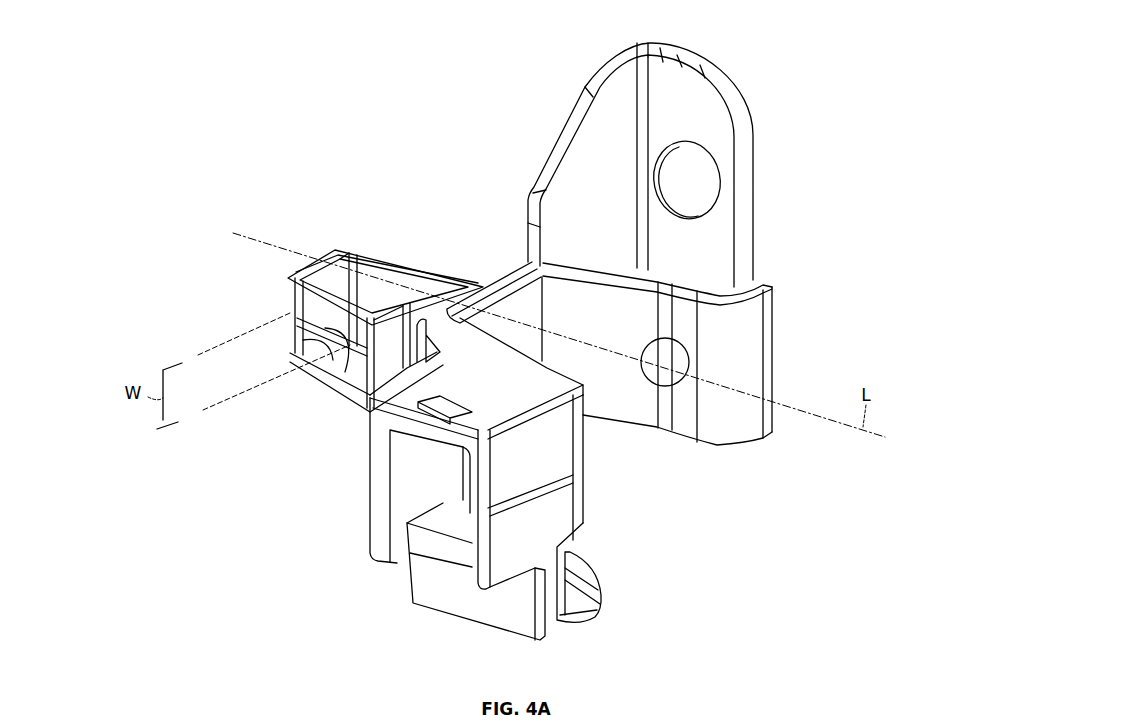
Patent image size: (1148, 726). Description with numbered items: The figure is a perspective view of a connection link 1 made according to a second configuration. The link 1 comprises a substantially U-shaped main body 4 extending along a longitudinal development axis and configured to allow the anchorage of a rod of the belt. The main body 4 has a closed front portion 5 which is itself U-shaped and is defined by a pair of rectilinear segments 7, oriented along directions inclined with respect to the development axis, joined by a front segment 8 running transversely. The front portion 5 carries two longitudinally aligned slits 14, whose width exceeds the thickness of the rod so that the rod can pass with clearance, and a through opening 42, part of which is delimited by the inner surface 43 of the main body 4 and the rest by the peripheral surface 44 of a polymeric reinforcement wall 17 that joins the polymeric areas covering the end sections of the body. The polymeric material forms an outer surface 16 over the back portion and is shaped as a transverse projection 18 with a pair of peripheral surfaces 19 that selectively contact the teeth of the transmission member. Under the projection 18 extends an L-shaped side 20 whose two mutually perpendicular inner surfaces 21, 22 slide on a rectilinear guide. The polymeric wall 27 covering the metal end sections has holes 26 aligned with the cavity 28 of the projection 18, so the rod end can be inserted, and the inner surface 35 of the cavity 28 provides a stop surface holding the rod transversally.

The link 1 is at (823, 160).
The main body 4 is at (445, 198).
The closed front portion 5 is at (390, 237).
The rectilinear segments 7 is at (465, 277).
The front segment 8 is at (322, 250).
The slits 14 is at (423, 277).
The outer surface of polymeric material 16 is at (609, 340).
The reinforcement wall 17 is at (493, 280).
The transverse projection 18 is at (355, 480).
The peripheral surfaces 19 is at (526, 460).
The side 20 is at (605, 598).
The inner surface 21 is at (575, 567).
The inner surface 22 is at (585, 612).
The holes 26 is at (660, 380).
The wall 27 is at (632, 265).
The cavity 28 is at (407, 472).
The inner surface of the cavity 35 is at (476, 571).
The opening 42 is at (377, 308).
The inner surface 43 is at (380, 247).
The peripheral surface 44 is at (437, 336).